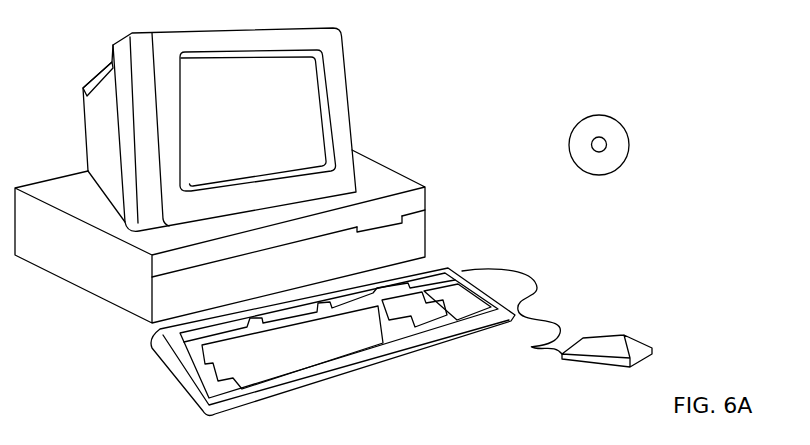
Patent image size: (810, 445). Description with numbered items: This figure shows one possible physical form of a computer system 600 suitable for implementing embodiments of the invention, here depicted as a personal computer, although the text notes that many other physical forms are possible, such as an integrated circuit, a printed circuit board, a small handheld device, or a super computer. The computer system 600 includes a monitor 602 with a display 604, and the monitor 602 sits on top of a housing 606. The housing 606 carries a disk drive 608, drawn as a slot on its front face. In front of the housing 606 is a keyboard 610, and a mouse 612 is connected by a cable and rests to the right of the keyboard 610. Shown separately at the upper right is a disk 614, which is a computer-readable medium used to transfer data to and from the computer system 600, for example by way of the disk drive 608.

The computer system 600 is at (453, 40).
The monitor 602 is at (350, 130).
The display 604 is at (315, 87).
The housing 606 is at (118, 307).
The disk drive 608 is at (402, 216).
The keyboard 610 is at (338, 377).
The mouse 612 is at (643, 334).
The disk 614 is at (612, 117).